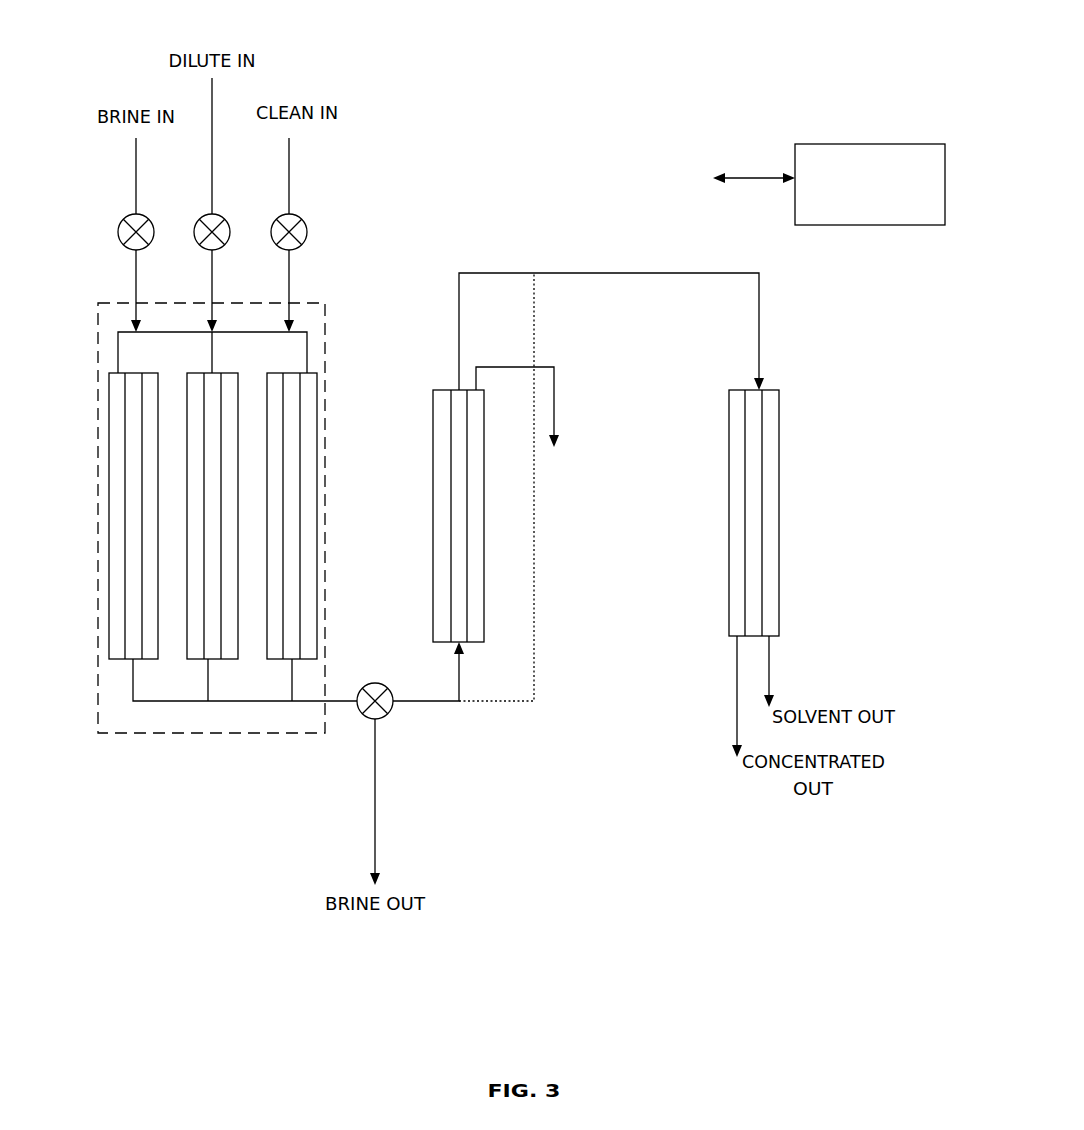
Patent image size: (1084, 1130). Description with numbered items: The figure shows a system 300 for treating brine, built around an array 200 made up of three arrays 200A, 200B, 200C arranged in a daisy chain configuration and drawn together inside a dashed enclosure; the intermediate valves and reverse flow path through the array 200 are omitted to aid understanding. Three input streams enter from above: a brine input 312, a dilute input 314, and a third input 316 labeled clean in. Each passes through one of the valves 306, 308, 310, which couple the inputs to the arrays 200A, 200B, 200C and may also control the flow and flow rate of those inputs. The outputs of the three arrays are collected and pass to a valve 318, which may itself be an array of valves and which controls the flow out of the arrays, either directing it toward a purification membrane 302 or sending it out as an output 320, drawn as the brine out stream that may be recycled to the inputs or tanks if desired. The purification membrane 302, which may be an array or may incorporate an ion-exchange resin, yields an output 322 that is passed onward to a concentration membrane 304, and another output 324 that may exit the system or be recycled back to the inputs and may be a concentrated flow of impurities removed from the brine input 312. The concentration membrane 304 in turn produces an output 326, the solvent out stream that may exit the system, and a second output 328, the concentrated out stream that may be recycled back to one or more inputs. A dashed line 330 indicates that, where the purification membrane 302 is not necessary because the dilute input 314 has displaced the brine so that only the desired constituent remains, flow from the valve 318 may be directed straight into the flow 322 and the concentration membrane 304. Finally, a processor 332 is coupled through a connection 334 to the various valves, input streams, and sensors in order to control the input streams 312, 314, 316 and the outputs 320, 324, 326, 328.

The system 300 is at (553, 72).
The array 200 is at (223, 518).
The array 200A is at (109, 498).
The array 200B is at (223, 372).
The array 200C is at (318, 447).
The purification membrane 302 is at (484, 478).
The concentration membrane 304 is at (779, 538).
The valve 306 is at (145, 248).
The valve 308 is at (190, 230).
The valve 310 is at (308, 232).
The brine input 312 is at (138, 162).
The dilute input 314 is at (213, 188).
The input 316 is at (290, 187).
The valve 318 is at (367, 683).
The output 320 is at (377, 810).
The output 322 is at (760, 315).
The output 324 is at (555, 407).
The output 326 is at (770, 675).
The output 328 is at (737, 693).
The dashed line 330 is at (534, 310).
The processor 332 is at (853, 144).
The connection 334 is at (762, 180).